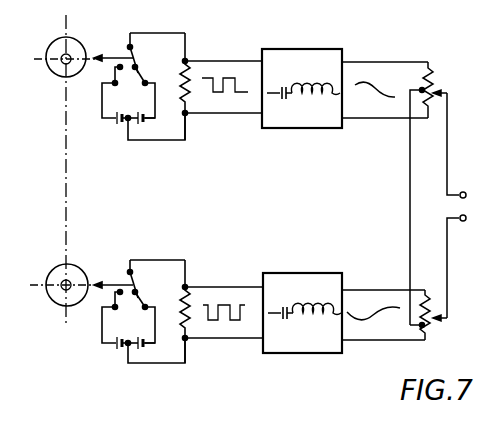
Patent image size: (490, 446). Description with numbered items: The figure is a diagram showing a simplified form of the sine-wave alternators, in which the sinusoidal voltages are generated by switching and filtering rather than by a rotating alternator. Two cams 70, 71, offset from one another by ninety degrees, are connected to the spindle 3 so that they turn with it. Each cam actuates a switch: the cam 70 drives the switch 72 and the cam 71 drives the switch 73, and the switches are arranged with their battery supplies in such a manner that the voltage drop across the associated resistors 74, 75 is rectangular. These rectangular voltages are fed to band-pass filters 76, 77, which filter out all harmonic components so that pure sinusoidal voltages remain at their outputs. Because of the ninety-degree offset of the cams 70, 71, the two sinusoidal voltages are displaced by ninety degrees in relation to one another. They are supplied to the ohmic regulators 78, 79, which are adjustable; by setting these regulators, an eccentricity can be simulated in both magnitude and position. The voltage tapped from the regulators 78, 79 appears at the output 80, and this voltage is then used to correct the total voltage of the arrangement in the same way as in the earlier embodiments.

The spindle 3 is at (68, 23).
The cam 70 is at (54, 49).
The cam 71 is at (77, 272).
The switch 72 is at (137, 63).
The switch 73 is at (137, 291).
The resistor 74 is at (187, 101).
The resistor 75 is at (187, 326).
The band-pass filter 76 is at (287, 58).
The band-pass filter 77 is at (295, 281).
The ohmic regulator 78 is at (433, 87).
The ohmic regulator 79 is at (424, 327).
The output 80 is at (468, 205).